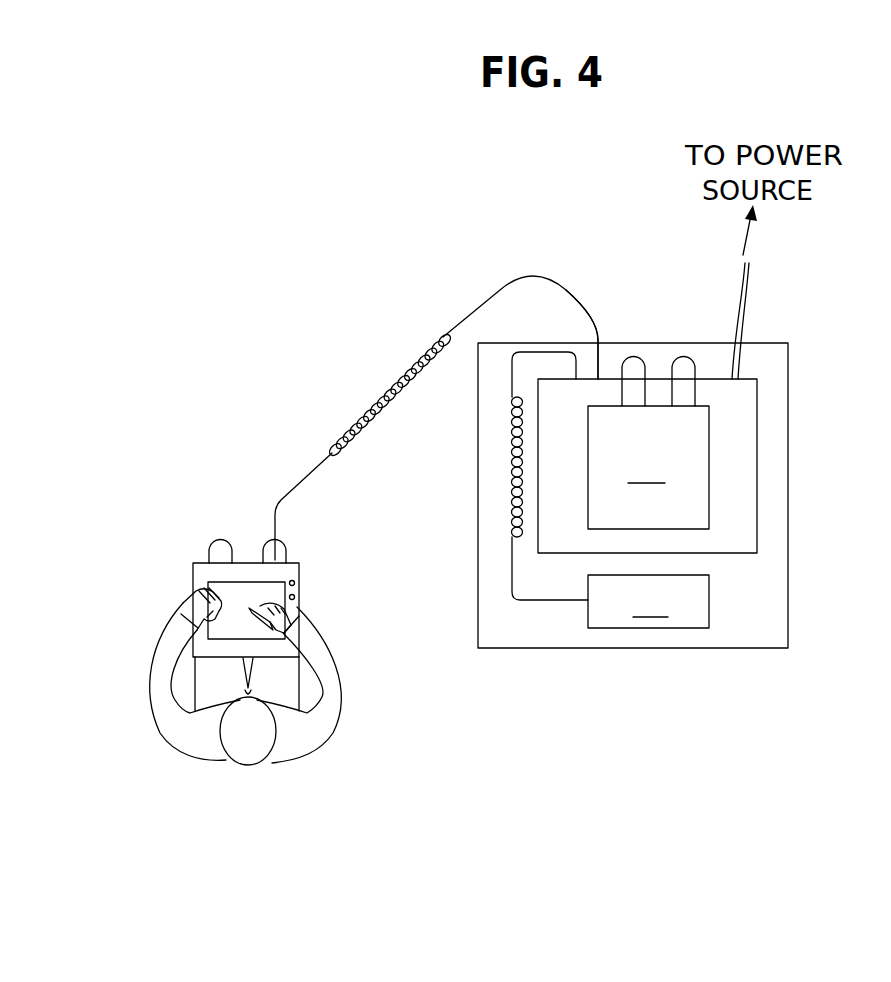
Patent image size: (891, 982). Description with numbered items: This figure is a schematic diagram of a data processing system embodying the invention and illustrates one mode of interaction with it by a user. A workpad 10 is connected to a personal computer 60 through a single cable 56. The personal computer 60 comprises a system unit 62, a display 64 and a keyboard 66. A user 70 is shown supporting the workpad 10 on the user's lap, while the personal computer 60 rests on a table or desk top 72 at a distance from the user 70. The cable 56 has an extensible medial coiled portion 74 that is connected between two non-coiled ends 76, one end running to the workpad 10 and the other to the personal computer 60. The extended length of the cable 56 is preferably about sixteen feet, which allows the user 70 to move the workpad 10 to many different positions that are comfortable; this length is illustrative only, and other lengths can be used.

The workpad 10 is at (311, 596).
The cable 56 is at (494, 278).
The personal computer 60 is at (691, 490).
The system unit 62 is at (733, 503).
The display 64 is at (648, 467).
The keyboard 66 is at (648, 601).
The user 70 is at (340, 710).
The table or desk top 72 is at (760, 597).
The extensible medial coiled portion 74 is at (395, 382).
The non-coiled ends 76 is at (275, 513).